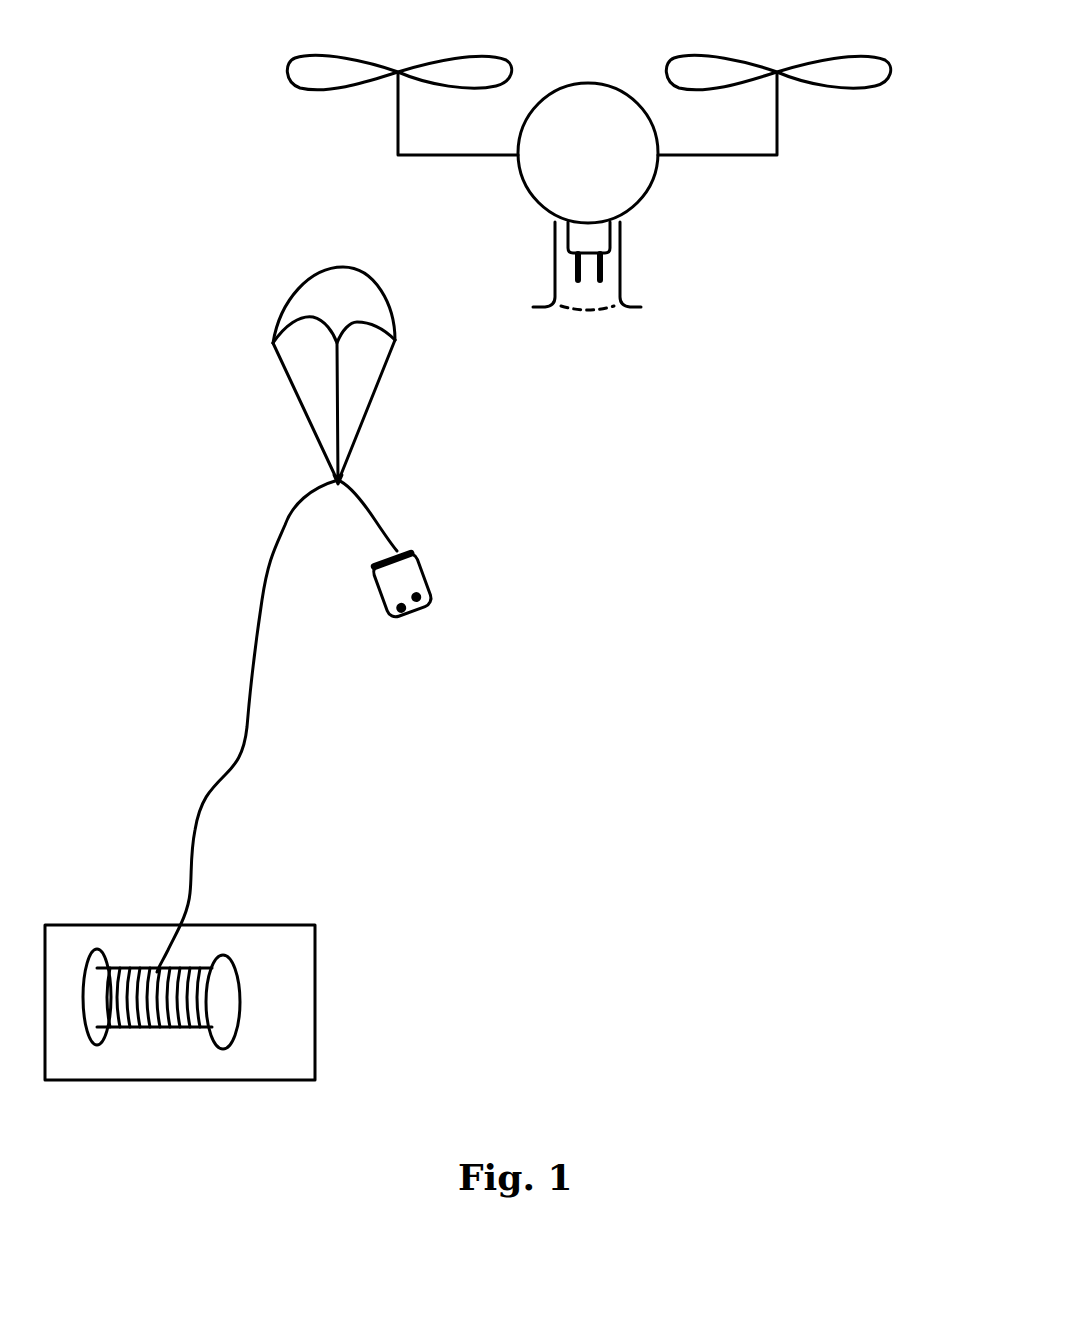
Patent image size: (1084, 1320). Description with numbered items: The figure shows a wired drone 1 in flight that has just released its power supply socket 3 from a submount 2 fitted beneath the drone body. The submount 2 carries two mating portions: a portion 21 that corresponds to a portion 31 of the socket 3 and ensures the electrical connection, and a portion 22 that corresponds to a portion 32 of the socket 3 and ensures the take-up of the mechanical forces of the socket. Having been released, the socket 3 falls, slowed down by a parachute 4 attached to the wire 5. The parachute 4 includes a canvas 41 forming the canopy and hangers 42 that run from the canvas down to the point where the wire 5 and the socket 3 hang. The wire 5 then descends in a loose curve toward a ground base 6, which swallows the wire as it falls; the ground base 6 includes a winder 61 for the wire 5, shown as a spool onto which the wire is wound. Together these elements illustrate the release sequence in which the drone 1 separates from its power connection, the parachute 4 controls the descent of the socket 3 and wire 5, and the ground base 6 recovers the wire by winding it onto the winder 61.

The drone 1 is at (626, 186).
The submount 2 is at (686, 266).
The portion of the submount 21 is at (610, 240).
The portion of the submount 22 is at (620, 287).
The power supply socket 3 is at (498, 580).
The portion of the socket 31 is at (402, 585).
The portion of the socket 32 is at (392, 559).
The parachute 4 is at (233, 374).
The canvas 41 is at (282, 312).
The hangers 42 is at (300, 397).
The wire 5 is at (246, 727).
The ground base 6 is at (290, 1001).
The winder 61 is at (225, 1002).